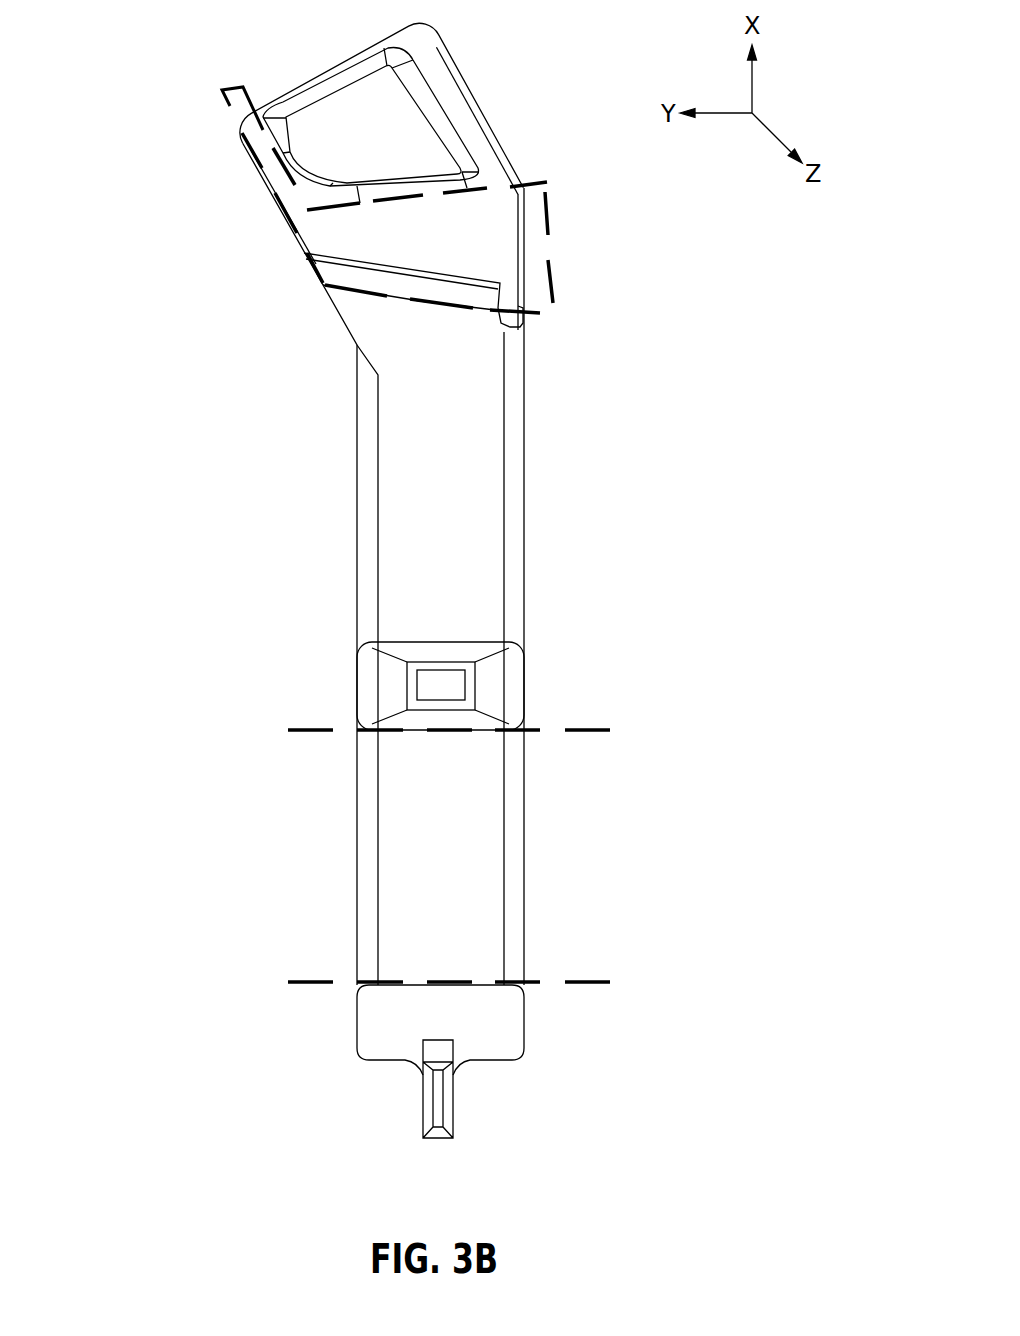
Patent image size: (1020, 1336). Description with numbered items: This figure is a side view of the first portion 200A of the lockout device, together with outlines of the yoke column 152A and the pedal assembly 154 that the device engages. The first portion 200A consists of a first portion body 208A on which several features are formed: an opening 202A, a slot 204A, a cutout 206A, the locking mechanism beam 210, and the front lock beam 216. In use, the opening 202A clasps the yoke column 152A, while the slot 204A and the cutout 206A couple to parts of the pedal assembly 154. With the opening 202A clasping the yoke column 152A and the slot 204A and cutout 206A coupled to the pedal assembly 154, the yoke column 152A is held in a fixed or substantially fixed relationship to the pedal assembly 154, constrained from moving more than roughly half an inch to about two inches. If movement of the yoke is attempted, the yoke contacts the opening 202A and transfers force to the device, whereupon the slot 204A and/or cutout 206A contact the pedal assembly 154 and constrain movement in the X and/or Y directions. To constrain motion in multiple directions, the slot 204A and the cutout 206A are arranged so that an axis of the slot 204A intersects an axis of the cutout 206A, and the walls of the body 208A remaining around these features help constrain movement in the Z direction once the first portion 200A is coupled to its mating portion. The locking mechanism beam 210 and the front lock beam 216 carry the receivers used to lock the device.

The pedal assembly 154 is at (230, 108).
The first portion 200A is at (356, 608).
The opening 202A is at (452, 835).
The slot 204A is at (427, 232).
The cutout 206A is at (270, 163).
The first portion body 208A is at (525, 502).
The locking mechanism beam 210 is at (477, 688).
The yoke column 152A is at (303, 984).
The front lock beam 216 is at (453, 1083).